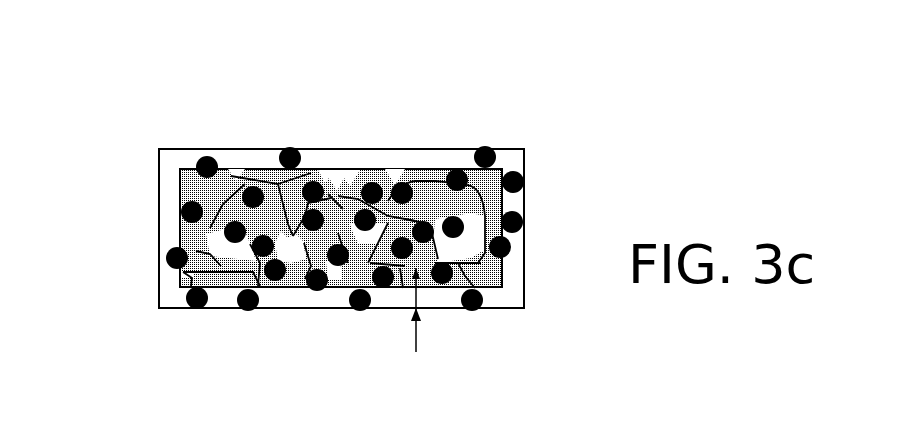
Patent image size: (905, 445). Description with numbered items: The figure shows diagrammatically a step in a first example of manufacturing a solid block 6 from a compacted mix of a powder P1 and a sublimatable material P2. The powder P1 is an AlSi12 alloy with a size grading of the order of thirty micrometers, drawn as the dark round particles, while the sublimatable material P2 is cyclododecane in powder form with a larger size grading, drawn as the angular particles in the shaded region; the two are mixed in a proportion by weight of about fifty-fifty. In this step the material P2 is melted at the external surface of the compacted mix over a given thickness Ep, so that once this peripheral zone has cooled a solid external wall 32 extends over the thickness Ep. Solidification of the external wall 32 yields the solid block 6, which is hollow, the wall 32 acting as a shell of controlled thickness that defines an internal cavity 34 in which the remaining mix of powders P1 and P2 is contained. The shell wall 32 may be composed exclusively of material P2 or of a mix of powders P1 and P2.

The solid block 6 is at (156, 162).
The external wall 32 is at (298, 308).
The internal cavity 34 is at (400, 170).
The powder P1 is at (206, 157).
The sublimatable material P2 is at (213, 190).
The given thickness Ep is at (432, 313).